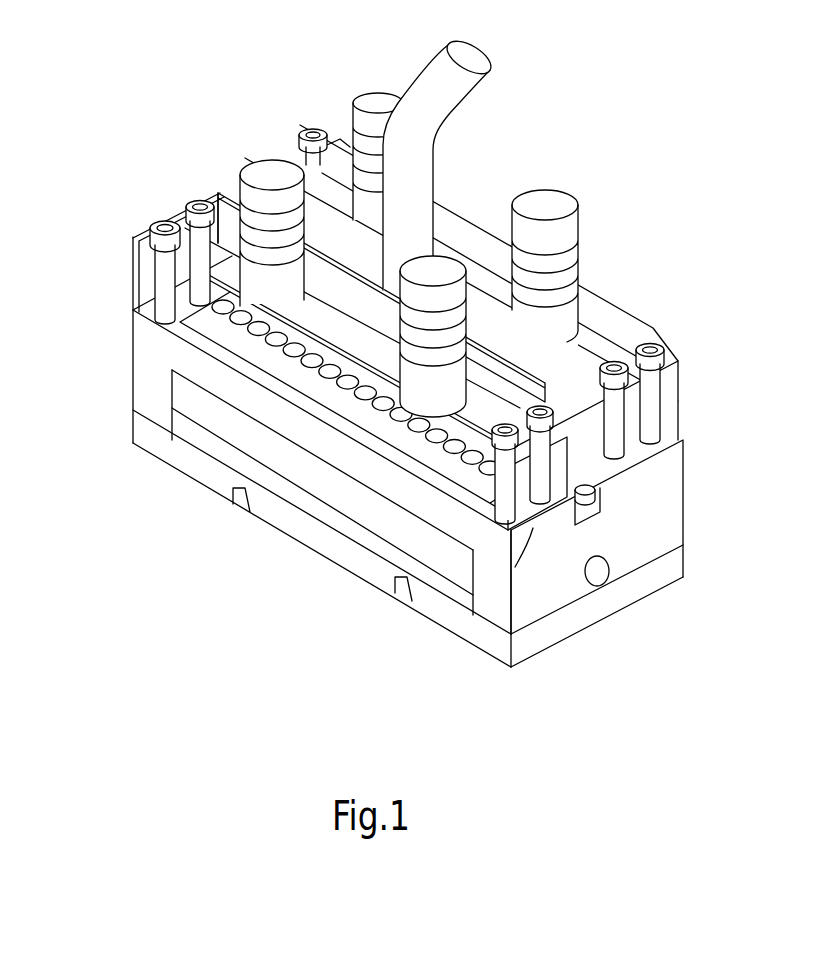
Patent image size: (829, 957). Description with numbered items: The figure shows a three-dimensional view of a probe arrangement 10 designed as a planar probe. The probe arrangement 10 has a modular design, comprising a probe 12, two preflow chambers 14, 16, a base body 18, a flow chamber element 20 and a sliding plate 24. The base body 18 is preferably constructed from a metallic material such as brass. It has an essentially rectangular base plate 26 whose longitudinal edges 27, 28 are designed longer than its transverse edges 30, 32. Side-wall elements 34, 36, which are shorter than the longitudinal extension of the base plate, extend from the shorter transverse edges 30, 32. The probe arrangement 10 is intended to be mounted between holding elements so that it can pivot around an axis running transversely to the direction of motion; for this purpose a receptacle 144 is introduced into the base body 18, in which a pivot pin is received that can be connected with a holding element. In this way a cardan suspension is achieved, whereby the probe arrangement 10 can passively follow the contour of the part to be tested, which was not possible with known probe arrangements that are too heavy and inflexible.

The probe arrangement 10 is at (282, 43).
The probe 12 is at (227, 182).
The preflow chamber 14 is at (118, 262).
The preflow chamber 16 is at (498, 163).
The base body 18 is at (118, 357).
The flow chamber element 20 is at (190, 402).
The sliding plate 24 is at (222, 468).
The base plate 26 is at (327, 456).
The longitudinal edge 27 is at (400, 470).
The longitudinal edge 28 is at (683, 437).
The transverse edge 30 is at (132, 309).
The transverse edge 32 is at (527, 542).
The side-wall element 34 is at (132, 410).
The side-wall element 36 is at (533, 593).
The receptacle 144 is at (597, 577).